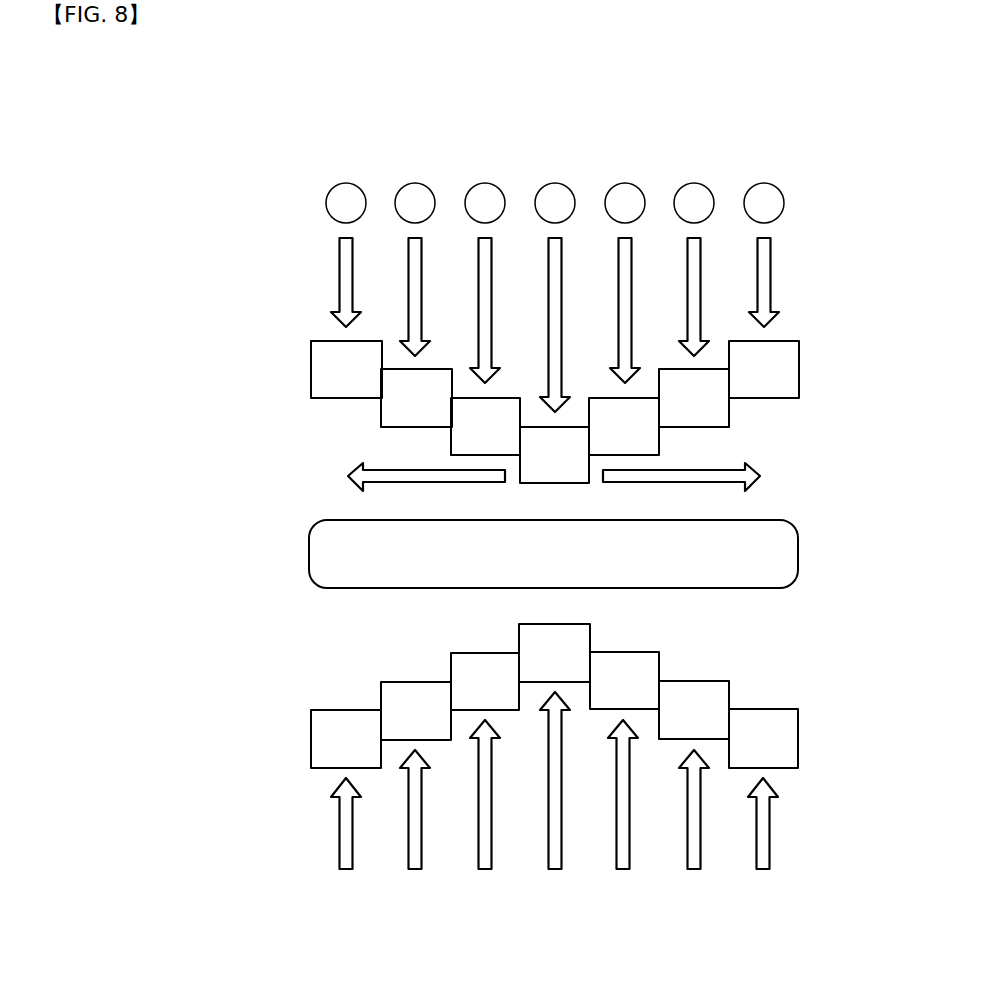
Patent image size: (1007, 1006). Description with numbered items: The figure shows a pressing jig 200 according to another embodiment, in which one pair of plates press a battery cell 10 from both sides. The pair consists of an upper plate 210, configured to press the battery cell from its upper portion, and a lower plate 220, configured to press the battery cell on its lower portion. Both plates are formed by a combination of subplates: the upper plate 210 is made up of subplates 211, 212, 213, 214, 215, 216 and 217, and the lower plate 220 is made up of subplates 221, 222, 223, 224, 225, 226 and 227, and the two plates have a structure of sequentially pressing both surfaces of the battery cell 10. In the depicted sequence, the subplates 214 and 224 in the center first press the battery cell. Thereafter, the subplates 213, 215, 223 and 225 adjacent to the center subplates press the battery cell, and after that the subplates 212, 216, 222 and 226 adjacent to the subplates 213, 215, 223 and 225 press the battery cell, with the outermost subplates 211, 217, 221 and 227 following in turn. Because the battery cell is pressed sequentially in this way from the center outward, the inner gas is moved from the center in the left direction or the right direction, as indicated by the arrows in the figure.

The pressing jig 200 is at (296, 125).
The substrate 10 is at (777, 548).
The upper plate 210 is at (290, 345).
The subplate 211 is at (323, 380).
The subplate 212 is at (395, 408).
The subplate 213 is at (473, 438).
The subplate 214 is at (553, 463).
The subplate 215 is at (635, 438).
The subplate 216 is at (713, 407).
The subplate 217 is at (783, 380).
The lower plate 220 is at (292, 763).
The subplate 221 is at (350, 722).
The subplate 222 is at (418, 695).
The subplate 223 is at (488, 667).
The subplate 224 is at (552, 647).
The subplate 225 is at (620, 667).
The subplate 226 is at (690, 695).
The subplate 227 is at (760, 723).